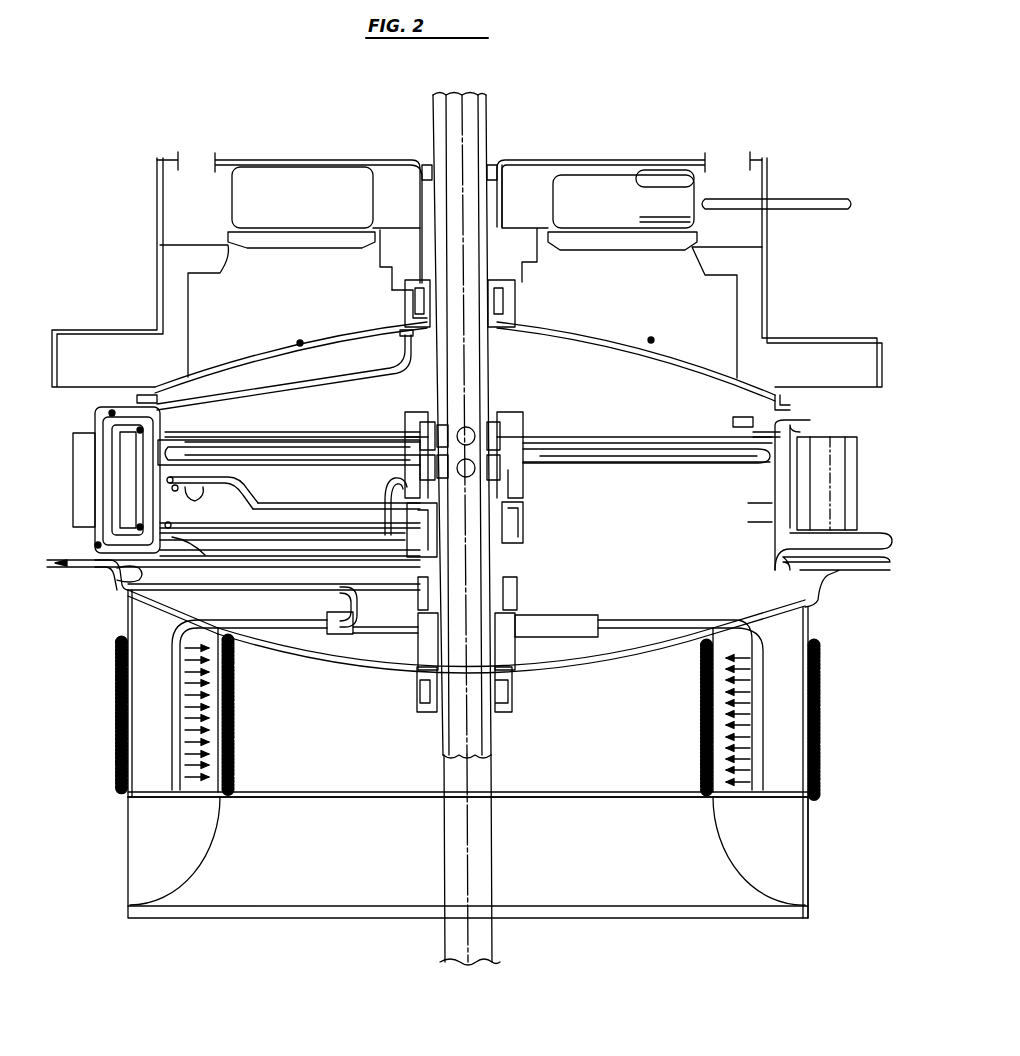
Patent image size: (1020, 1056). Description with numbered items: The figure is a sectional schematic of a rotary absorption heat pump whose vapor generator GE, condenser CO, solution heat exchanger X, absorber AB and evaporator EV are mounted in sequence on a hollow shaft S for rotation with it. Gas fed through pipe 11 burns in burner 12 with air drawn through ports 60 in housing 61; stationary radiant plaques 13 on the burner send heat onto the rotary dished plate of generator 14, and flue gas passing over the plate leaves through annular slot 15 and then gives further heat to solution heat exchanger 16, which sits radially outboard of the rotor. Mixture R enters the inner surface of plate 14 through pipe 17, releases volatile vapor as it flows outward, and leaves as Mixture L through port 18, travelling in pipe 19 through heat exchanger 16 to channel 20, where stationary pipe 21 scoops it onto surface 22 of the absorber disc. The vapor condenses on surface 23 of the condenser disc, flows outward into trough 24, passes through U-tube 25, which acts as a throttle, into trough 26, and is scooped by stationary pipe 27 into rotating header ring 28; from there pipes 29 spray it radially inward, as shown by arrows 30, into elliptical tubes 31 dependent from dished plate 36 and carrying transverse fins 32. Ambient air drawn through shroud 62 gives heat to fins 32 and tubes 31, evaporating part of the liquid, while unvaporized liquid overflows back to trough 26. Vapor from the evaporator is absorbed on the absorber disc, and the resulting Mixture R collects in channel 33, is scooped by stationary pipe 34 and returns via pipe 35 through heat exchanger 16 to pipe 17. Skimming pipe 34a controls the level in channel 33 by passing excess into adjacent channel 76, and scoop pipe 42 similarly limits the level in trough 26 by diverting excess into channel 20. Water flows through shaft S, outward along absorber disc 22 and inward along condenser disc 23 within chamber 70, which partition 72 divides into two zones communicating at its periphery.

The shaft S is at (487, 108).
The ports 60 is at (459, 217).
The pipe 11 is at (814, 200).
The housing 61 is at (158, 190).
The burner 12 is at (622, 212).
The radiant plaques 13 is at (301, 209).
The dished plate of generator 14 is at (344, 330).
The annular slot 15 is at (804, 399).
The pipe 17 is at (345, 382).
The port 18 is at (166, 424).
The pipe 19 is at (104, 425).
The solution heat exchanger X is at (56, 482).
The channel 33 is at (178, 478).
The stationary pipe 34 is at (248, 482).
The stationary skimming pipe 34a is at (212, 503).
The stationary pipe 21 is at (380, 482).
The channel 20 is at (180, 537).
The pipe 35 is at (353, 557).
The scoop pipe 42 is at (118, 582).
The stationary pipe 27 is at (260, 590).
The pipes 29 is at (288, 622).
The header ring 28 is at (376, 632).
The partition 72 is at (563, 460).
The surface of condenser disc 23 is at (561, 437).
The chamber 70 is at (635, 463).
The surface of absorber disc 22 is at (583, 470).
The trough 24 is at (728, 428).
The channel 76 is at (750, 513).
The solution heat exchanger 16 is at (855, 477).
The condenser CO is at (900, 450).
The absorber AB is at (900, 502).
The U-tube 25 is at (895, 518).
The vapor generator GE is at (910, 374).
The trough 26 is at (833, 669).
The dished plate 36 is at (330, 665).
The elliptical tubes 31 is at (223, 685).
The fins 32 is at (236, 753).
The arrows 30 is at (200, 719).
The evaporator EV is at (862, 717).
The shroud 62 is at (254, 882).